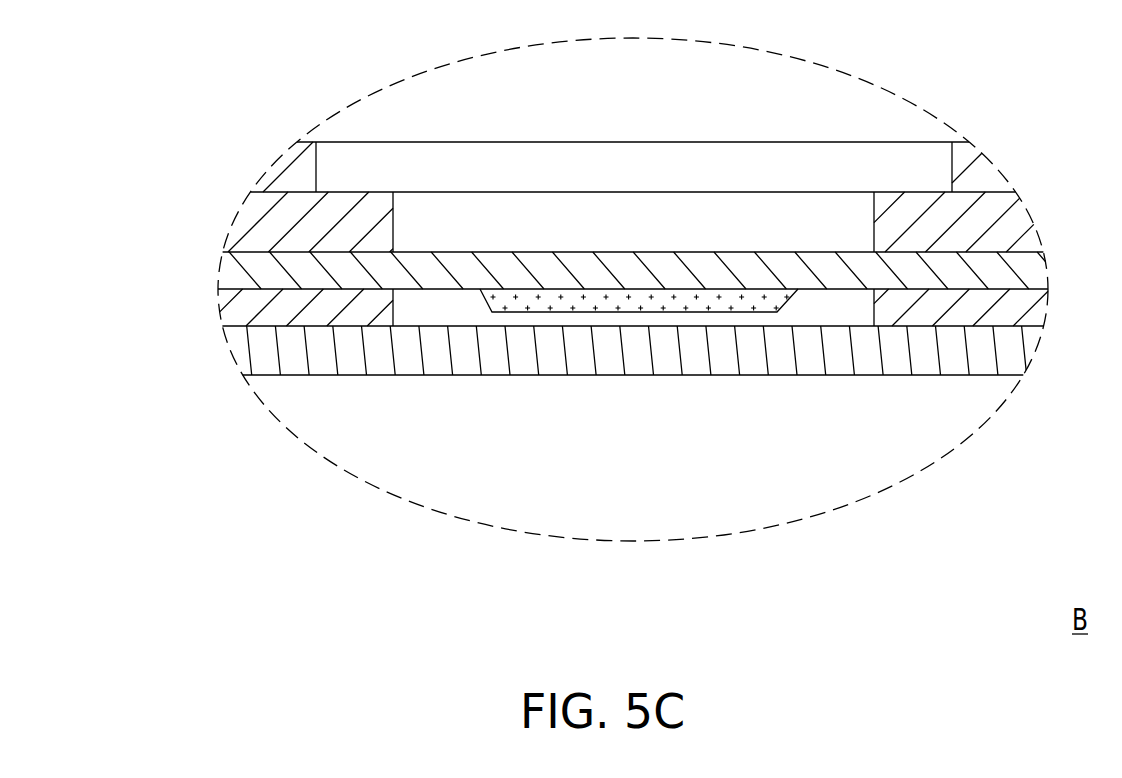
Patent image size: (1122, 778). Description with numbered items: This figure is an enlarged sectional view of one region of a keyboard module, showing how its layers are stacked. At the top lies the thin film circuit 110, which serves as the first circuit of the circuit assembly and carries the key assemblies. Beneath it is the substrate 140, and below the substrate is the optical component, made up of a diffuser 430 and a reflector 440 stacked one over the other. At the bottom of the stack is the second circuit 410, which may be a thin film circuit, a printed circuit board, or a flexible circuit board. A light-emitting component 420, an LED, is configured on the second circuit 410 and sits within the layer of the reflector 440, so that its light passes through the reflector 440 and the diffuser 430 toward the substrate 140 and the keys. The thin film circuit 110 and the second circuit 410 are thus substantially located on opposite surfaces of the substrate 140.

The thin film circuit 110 is at (292, 172).
The substrate 140 is at (290, 221).
The diffuser 430 is at (270, 268).
The reflector 440 is at (247, 307).
The second circuit 410 is at (260, 347).
The light-emitting component 420 is at (614, 303).